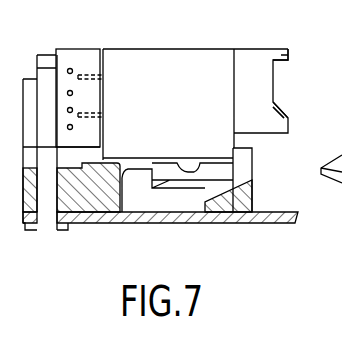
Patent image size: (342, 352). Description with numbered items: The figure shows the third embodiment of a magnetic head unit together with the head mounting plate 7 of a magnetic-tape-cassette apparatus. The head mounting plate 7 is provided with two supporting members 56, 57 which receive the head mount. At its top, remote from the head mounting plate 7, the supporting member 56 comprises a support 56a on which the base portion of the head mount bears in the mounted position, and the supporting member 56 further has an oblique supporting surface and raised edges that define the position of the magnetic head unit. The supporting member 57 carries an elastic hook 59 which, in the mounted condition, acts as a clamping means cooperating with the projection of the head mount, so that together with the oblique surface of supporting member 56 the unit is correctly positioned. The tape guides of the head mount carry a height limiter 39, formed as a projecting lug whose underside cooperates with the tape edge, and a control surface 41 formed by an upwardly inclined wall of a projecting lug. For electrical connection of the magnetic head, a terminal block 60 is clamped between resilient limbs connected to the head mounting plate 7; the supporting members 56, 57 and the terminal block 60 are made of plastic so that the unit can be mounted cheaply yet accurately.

The terminal block 60 is at (82, 60).
The height limiter 39 is at (286, 53).
The control surface 41 is at (286, 117).
The support 56a is at (249, 164).
The supporting member 56 is at (237, 198).
The supporting member 57 is at (95, 193).
The elastic hook 59 is at (135, 165).
The head mounting plate 7 is at (282, 218).